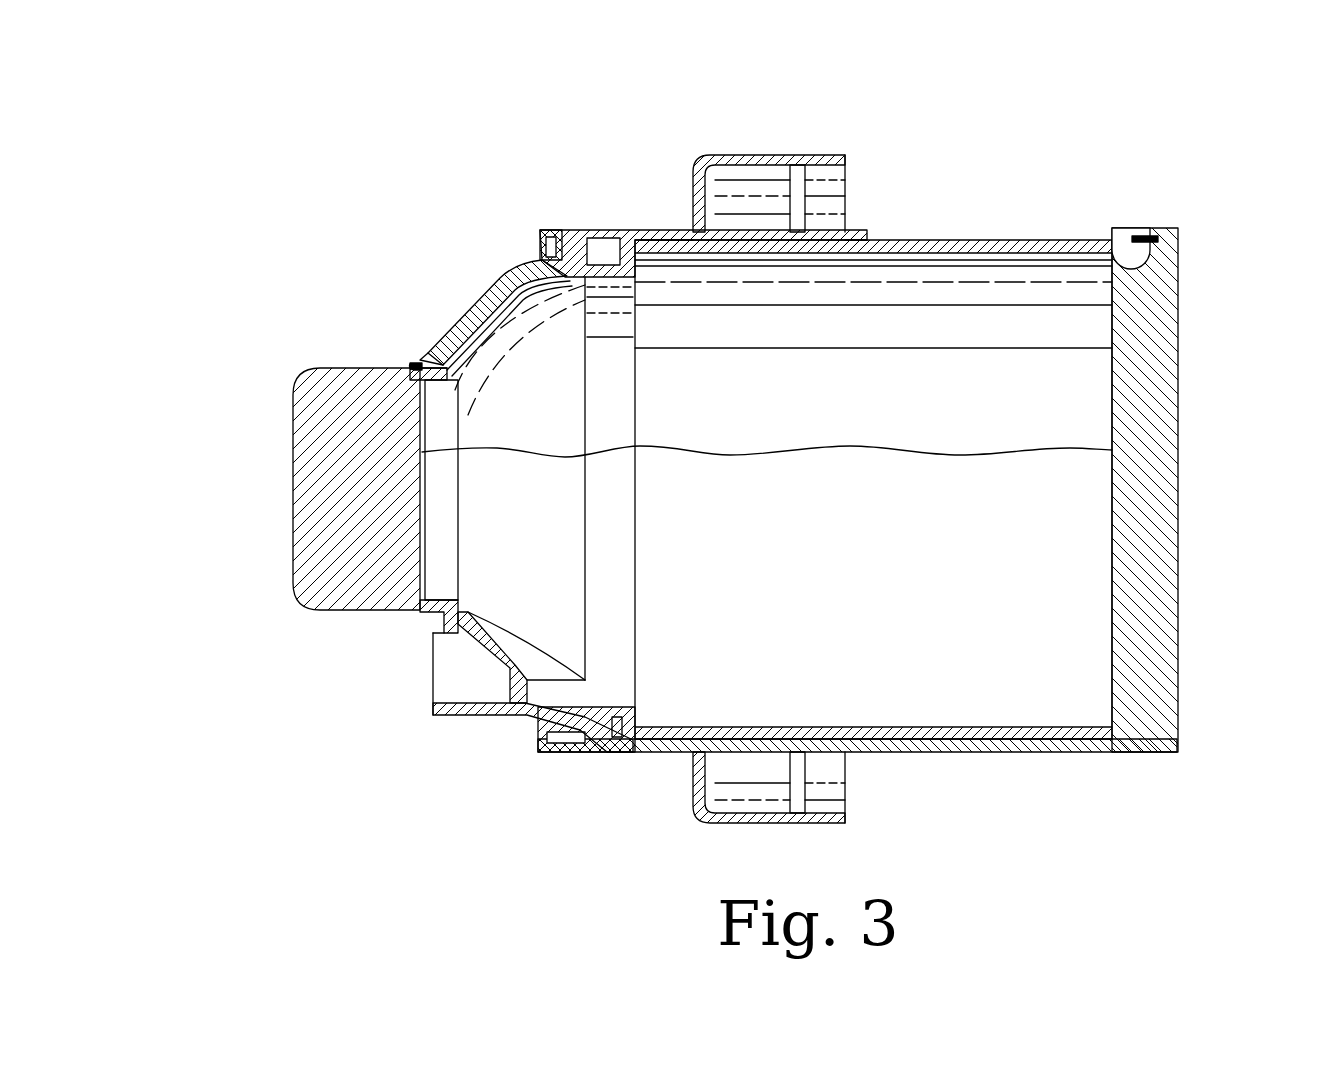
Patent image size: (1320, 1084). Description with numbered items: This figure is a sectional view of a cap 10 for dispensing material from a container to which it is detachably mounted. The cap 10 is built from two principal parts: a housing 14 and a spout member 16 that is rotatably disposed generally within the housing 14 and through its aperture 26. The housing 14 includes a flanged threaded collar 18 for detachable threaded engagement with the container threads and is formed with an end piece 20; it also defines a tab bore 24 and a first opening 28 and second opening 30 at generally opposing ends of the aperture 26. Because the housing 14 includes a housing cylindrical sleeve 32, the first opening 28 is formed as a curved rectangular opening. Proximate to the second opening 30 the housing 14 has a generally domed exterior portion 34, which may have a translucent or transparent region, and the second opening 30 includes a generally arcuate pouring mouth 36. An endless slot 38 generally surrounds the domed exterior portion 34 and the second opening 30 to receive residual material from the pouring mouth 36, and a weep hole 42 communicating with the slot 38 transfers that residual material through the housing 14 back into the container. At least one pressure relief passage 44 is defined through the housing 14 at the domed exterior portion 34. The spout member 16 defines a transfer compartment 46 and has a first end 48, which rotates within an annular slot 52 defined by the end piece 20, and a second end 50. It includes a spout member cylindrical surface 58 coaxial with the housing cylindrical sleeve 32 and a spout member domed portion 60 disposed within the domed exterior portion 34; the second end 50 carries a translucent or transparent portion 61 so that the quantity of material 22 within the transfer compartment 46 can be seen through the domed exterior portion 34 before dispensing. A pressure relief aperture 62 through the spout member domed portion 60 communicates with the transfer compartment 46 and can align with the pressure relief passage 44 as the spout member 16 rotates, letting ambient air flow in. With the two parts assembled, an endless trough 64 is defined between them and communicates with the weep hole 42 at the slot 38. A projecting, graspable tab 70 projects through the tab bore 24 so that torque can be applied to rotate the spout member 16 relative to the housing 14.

The cap 10 is at (1114, 180).
The housing 14 is at (601, 234).
The spout member 16 is at (958, 726).
The flanged threaded collar 18 is at (848, 160).
The end piece 20 is at (1180, 524).
The material 22 is at (946, 452).
The tab bore 24 is at (430, 612).
The aperture 26 is at (657, 232).
The first opening 28 is at (869, 236).
The second opening 30 is at (432, 668).
The housing cylindrical sleeve 32 is at (1010, 240).
The domed exterior portion 34 is at (441, 342).
The pouring mouth 36 is at (433, 706).
The endless slot 38 is at (551, 237).
The weep hole 42 is at (594, 752).
The pressure relief passage 44 is at (498, 270).
The transfer compartment 46 is at (858, 405).
The first end 48 is at (1082, 254).
The second end 50 is at (545, 292).
The annular slot 52 is at (1158, 268).
The spout member cylindrical surface 58 is at (740, 724).
The spout member domed portion 60 is at (476, 322).
The translucent or transparent portion 61 is at (426, 360).
The pressure relief aperture 62 is at (508, 322).
The endless trough 64 is at (606, 242).
The tab 70 is at (296, 470).